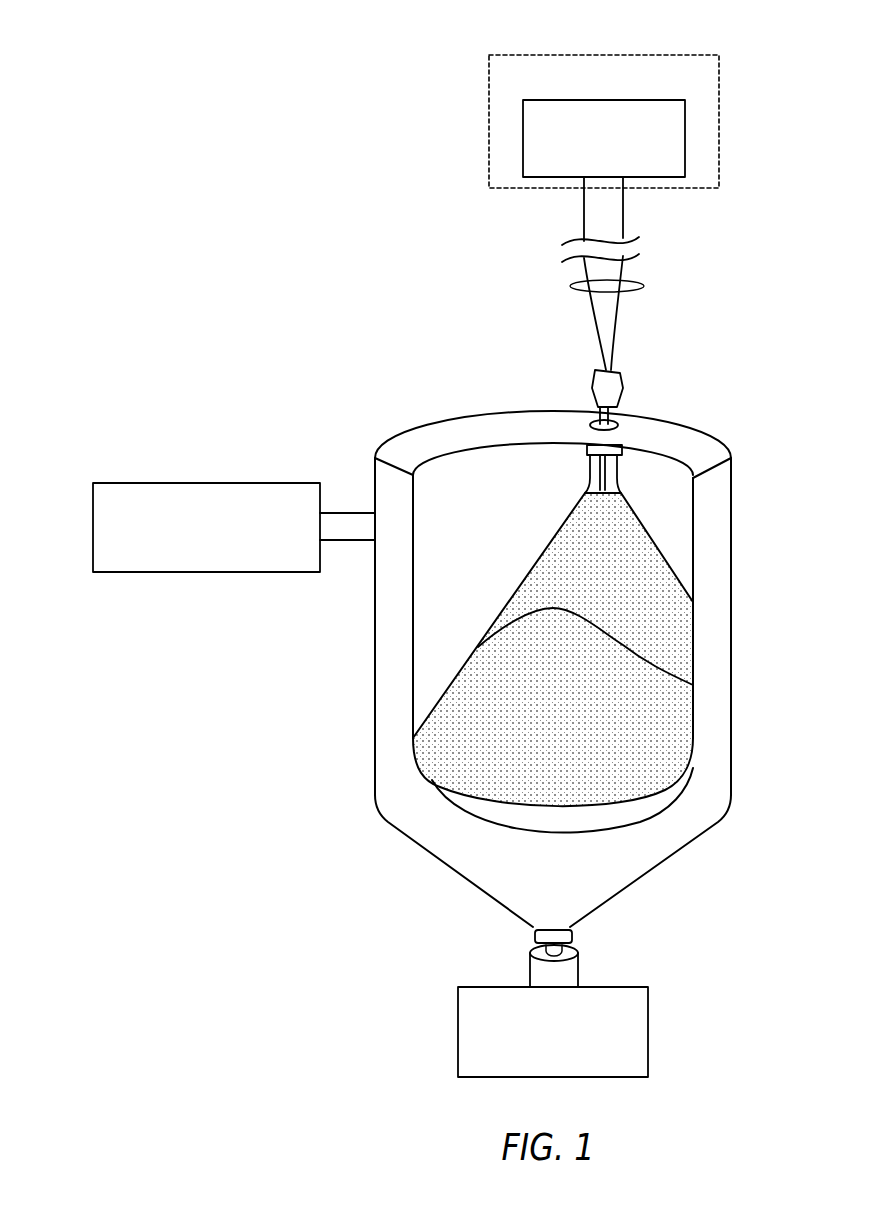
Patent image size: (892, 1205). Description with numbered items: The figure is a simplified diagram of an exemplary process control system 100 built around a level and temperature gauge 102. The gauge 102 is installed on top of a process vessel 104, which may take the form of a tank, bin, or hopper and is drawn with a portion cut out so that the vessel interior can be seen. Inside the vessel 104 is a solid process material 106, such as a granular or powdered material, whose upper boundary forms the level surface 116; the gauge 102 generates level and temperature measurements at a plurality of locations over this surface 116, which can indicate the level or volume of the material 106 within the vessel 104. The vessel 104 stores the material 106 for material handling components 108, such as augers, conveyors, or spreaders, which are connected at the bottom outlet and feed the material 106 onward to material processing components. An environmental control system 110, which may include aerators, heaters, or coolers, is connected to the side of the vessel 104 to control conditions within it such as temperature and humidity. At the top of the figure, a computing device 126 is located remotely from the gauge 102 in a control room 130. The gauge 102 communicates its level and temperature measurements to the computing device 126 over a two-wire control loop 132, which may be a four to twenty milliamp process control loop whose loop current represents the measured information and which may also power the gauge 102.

The process control system 100 is at (208, 140).
The level and temperature gauge 102 is at (637, 371).
The process vessel 104 is at (722, 607).
The solid process material 106 is at (430, 686).
The material handling components 108 is at (470, 987).
The environmental control system 110 is at (128, 483).
The level surface 116 is at (451, 665).
The computing device 126 is at (523, 118).
The control room 130 is at (698, 55).
The two-wire control loop 132 is at (574, 285).